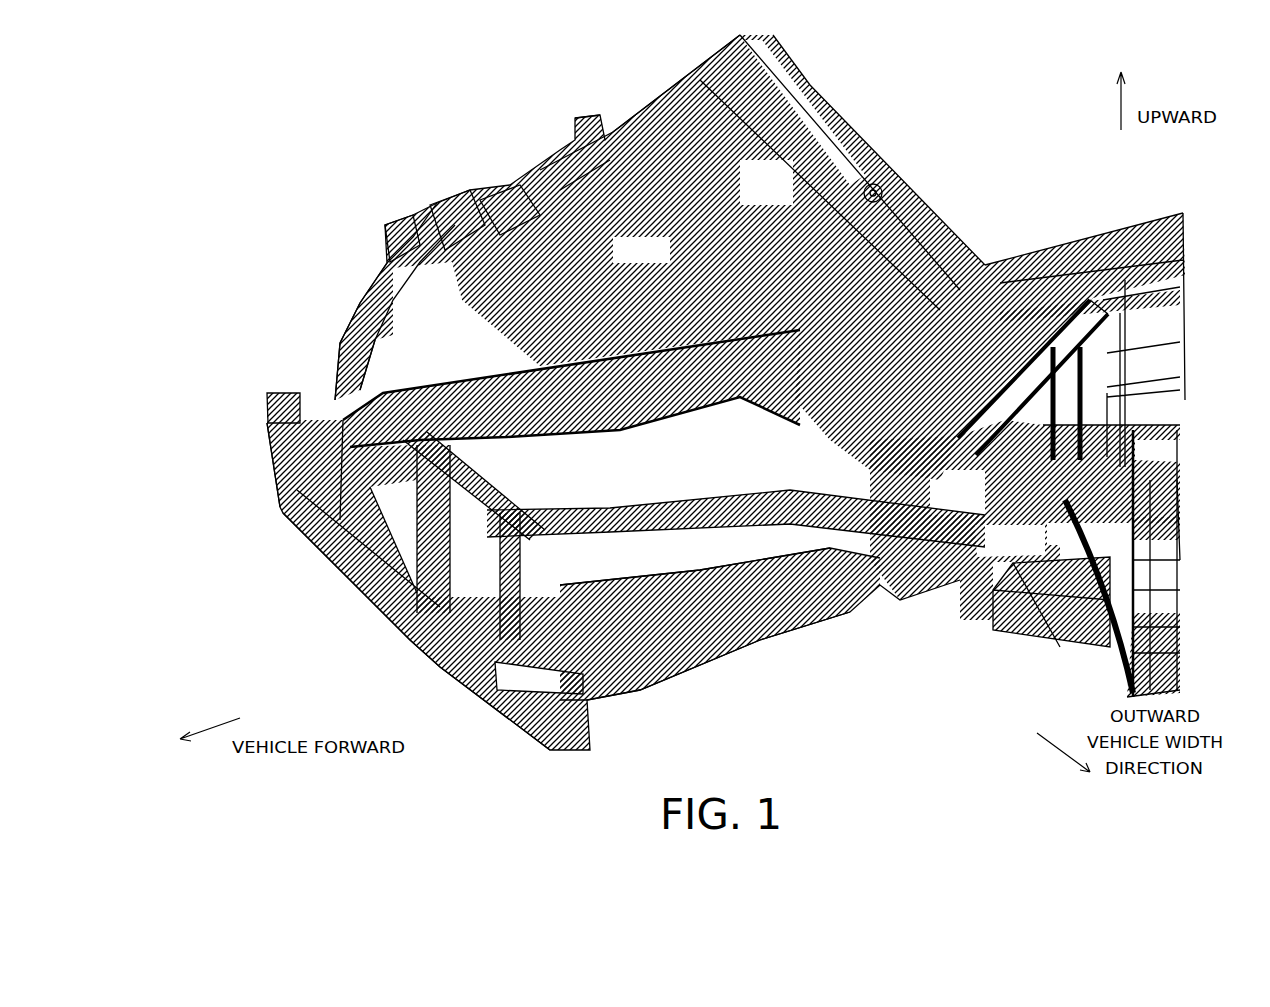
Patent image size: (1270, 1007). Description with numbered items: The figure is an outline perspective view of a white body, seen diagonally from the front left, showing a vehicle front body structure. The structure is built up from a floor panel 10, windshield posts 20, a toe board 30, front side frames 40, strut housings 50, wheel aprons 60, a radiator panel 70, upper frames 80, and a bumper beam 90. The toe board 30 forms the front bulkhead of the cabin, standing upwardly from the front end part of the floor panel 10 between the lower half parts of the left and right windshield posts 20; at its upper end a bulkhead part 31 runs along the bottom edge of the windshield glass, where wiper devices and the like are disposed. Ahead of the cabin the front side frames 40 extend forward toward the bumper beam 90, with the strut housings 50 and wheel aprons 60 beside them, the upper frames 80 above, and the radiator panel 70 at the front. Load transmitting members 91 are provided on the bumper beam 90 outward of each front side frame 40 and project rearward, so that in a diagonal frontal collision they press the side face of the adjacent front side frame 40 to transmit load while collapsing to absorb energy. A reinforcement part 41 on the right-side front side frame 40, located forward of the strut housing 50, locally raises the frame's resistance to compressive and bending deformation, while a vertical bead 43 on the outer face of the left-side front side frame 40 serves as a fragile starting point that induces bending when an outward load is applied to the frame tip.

The floor panel 10 is at (1140, 320).
The windshield posts (A-pillars) 20 is at (1183, 480).
The toe board 30 is at (875, 183).
The bulkhead part 31 is at (885, 215).
The front side frame 40 is at (443, 193).
The reinforcement part 41 is at (390, 243).
The bead 43 is at (797, 613).
The strut housing 50 is at (565, 160).
The wheel apron 60 is at (497, 188).
The radiator panel 70 is at (335, 368).
The upper frame 80 is at (367, 283).
The bumper beam 90 is at (320, 560).
The load transmitting member 91 is at (265, 403).